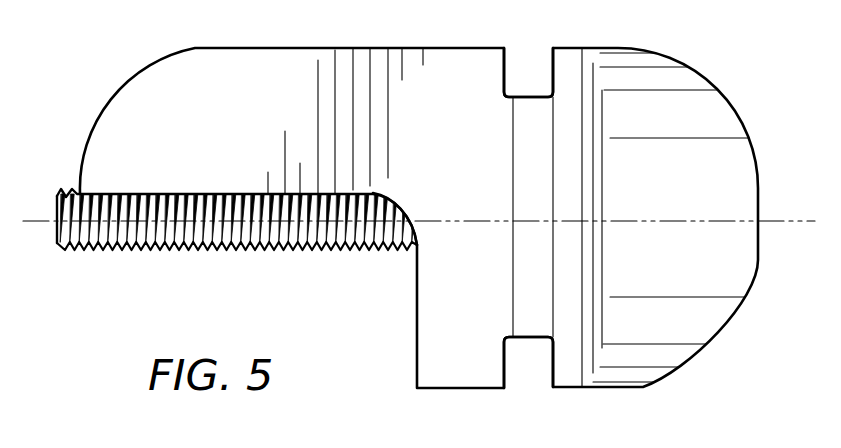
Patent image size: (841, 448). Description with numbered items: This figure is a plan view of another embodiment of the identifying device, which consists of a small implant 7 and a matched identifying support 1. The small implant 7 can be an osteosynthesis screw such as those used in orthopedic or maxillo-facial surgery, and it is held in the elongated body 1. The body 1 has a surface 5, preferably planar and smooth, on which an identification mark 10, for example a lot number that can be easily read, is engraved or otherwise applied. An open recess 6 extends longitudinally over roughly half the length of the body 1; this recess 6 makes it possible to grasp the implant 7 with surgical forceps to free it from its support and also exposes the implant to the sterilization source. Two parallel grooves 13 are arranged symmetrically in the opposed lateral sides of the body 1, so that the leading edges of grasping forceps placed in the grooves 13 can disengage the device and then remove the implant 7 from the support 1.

The identifying support 1 is at (407, 322).
The surface 5 is at (360, 52).
The open recess 6 is at (364, 258).
The small implant 7 is at (192, 247).
The identification mark 10 is at (247, 85).
The parallel grooves 13 is at (525, 56).